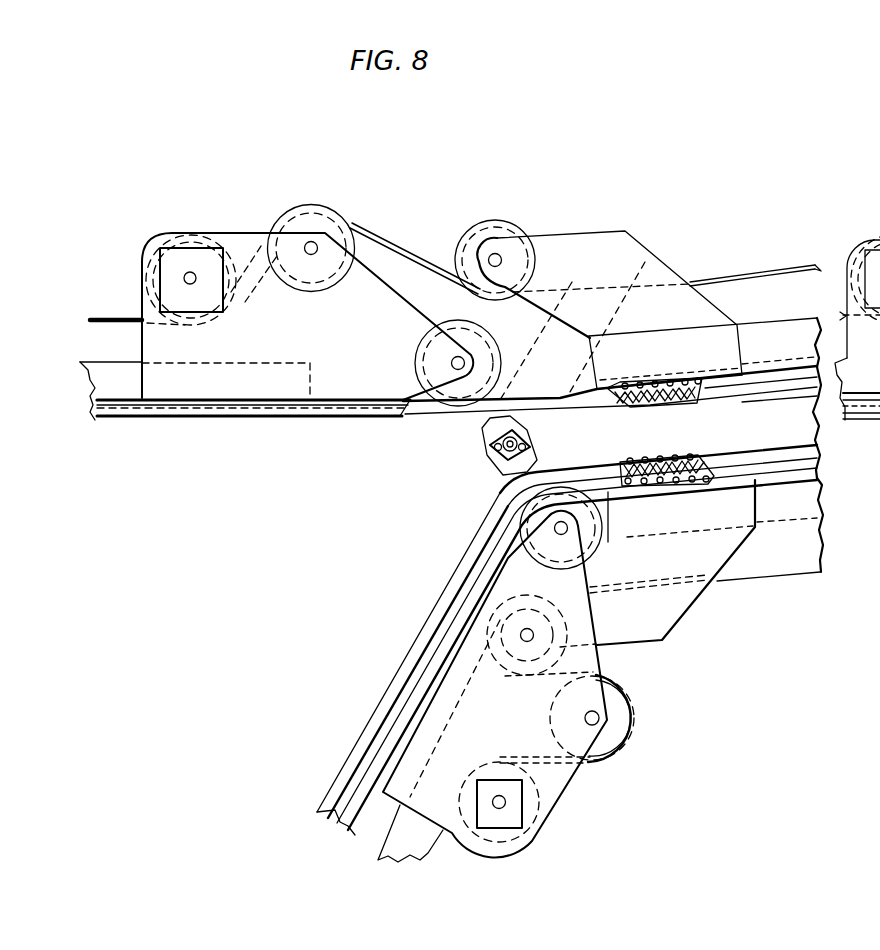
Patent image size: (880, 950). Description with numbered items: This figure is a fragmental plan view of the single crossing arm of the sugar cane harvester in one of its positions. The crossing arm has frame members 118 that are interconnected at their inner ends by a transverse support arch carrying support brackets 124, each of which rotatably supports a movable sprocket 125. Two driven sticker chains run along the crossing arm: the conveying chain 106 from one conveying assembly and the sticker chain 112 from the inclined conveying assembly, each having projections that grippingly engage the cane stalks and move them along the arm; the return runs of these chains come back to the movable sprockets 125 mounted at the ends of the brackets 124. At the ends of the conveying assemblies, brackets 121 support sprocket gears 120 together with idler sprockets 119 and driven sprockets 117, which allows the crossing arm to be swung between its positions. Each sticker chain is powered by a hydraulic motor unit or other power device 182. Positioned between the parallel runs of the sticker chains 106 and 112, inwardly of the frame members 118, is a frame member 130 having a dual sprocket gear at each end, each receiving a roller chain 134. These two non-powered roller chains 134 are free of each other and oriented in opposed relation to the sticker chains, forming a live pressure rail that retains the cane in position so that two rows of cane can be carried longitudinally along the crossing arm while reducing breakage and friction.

The conveying chain 106 is at (693, 383).
The sticker chain 112 is at (614, 488).
The driven sprocket 117 is at (591, 793).
The frame member 118 is at (780, 340).
The idler sprocket 119 is at (322, 223).
The sprocket gear 120 is at (445, 399).
The bracket 121 is at (366, 302).
The support bracket 124 is at (617, 253).
The movable sprocket 125 is at (498, 233).
The frame member 130 is at (792, 412).
The roller chain 134 is at (697, 460).
The hydraulic motor unit 182 is at (212, 255).